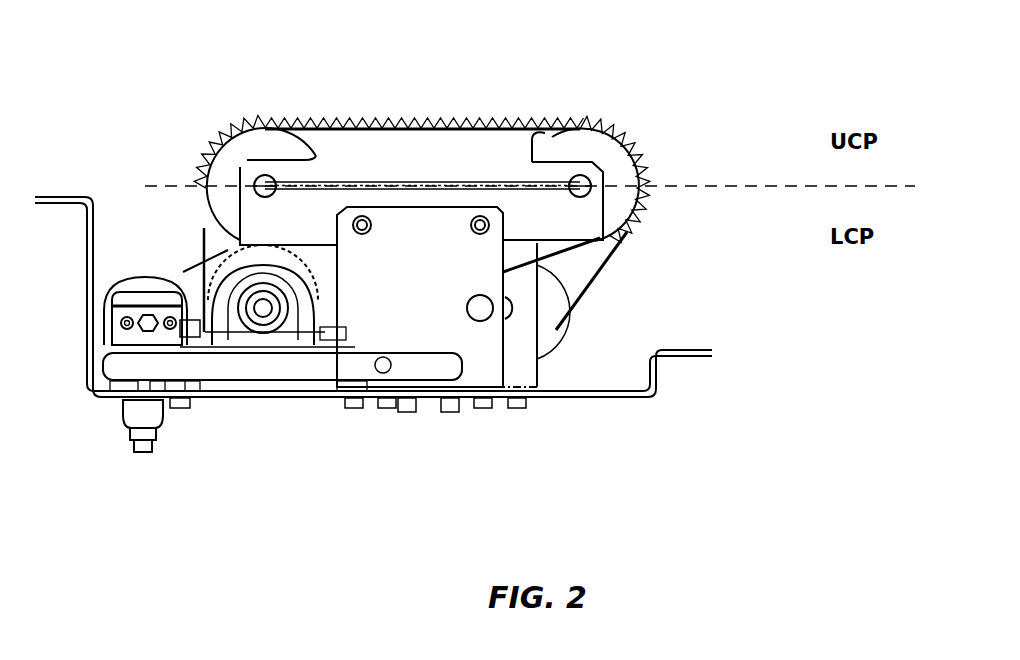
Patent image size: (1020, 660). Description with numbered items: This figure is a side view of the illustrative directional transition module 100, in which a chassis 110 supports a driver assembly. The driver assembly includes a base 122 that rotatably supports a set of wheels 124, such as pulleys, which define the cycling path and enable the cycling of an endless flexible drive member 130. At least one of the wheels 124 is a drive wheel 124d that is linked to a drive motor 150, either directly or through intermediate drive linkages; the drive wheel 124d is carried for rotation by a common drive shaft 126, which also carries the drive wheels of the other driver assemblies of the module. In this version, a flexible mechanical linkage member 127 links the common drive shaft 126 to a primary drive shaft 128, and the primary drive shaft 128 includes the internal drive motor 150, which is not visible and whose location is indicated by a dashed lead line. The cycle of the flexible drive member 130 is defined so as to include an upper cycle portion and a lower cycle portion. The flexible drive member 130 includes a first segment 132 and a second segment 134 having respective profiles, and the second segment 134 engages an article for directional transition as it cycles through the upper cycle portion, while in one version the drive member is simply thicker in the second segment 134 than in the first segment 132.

The directional transition module 100 is at (440, 450).
The chassis 110 is at (627, 400).
The base 122 is at (432, 300).
The wheels 124 is at (268, 148).
The drive wheel 124d is at (213, 262).
The common drive shaft 126 is at (264, 310).
The flexible mechanical linkage member 127 is at (200, 365).
The primary drive shaft 128 is at (125, 296).
The flexible drive member 130 is at (215, 243).
The first segment 132 is at (593, 273).
The second segment 134 is at (222, 135).
The drive motor 150 is at (127, 277).